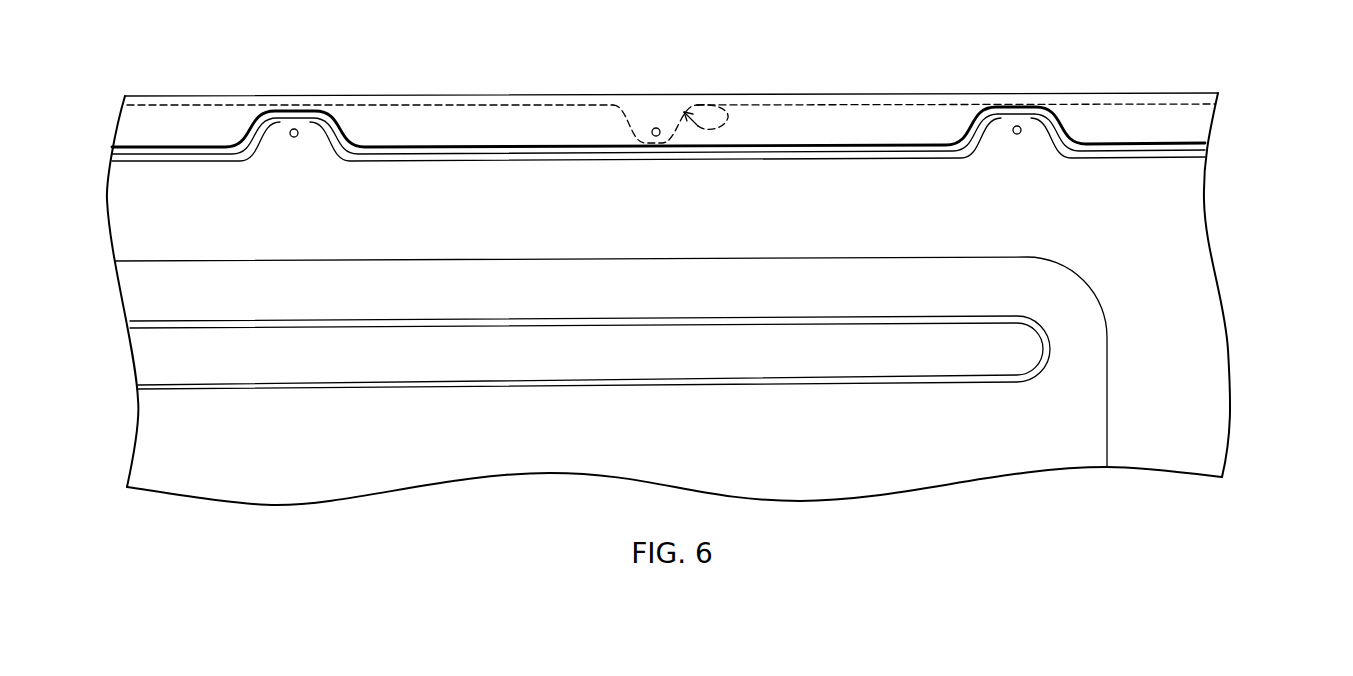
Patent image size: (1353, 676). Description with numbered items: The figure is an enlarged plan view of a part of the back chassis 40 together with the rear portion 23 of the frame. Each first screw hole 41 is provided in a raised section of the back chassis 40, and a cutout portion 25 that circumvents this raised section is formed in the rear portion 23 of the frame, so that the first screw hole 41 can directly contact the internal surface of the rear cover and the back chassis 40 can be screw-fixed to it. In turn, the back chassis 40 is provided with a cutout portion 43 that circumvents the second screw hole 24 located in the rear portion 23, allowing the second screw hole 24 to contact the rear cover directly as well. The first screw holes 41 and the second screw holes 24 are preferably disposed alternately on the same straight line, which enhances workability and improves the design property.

The rear portion 23 is at (1200, 122).
The second screw hole 24 is at (655, 128).
The cutout portion 25 is at (336, 117).
The back chassis 40 is at (1192, 232).
The first screw hole 41 is at (295, 129).
The cutout portion 43 is at (723, 105).